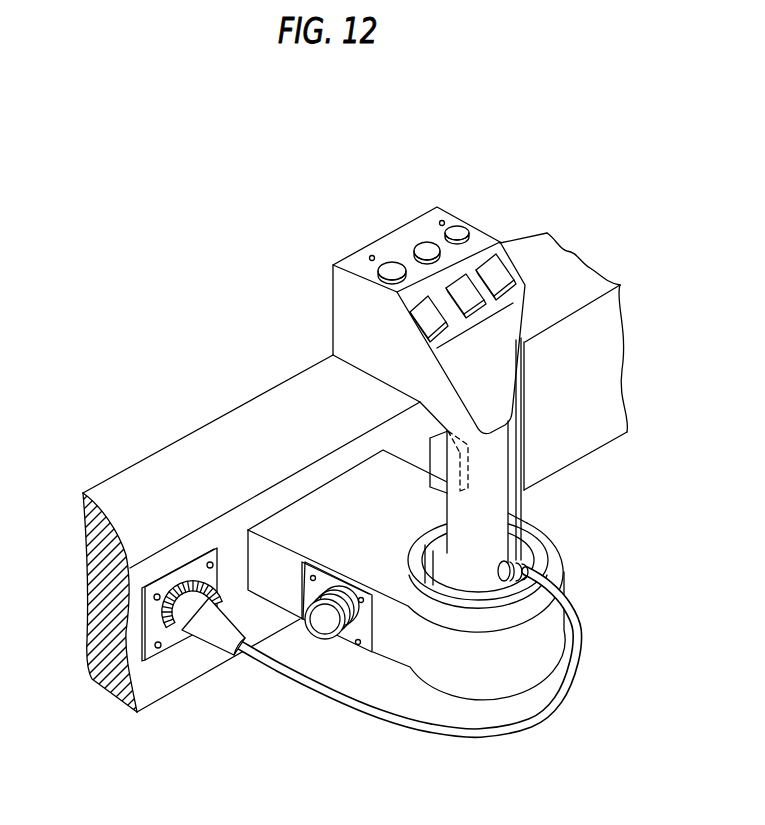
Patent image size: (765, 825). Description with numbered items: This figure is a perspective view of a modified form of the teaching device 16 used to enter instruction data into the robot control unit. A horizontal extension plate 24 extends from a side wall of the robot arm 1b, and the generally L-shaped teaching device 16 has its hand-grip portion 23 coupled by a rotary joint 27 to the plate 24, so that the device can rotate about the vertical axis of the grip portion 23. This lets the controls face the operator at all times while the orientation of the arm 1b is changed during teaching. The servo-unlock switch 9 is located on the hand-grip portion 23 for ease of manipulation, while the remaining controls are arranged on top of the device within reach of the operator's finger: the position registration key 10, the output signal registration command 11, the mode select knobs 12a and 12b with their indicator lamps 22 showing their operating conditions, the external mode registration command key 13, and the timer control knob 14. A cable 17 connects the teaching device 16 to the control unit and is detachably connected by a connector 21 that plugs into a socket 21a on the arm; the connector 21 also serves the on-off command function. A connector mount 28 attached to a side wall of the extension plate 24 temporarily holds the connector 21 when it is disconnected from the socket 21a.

The arm 1b is at (170, 448).
The servo-unlock switch 9 is at (437, 472).
The position registration key 10 is at (495, 246).
The output signal registration command 11 is at (427, 318).
The mode select knob 12a is at (392, 262).
The mode select knob 12b is at (460, 226).
The external mode registration command key 13 is at (506, 285).
The timer control knob 14 is at (428, 242).
The teaching device 16 is at (305, 303).
The cable 17 is at (580, 661).
The connector 21 is at (216, 642).
The socket 21a is at (157, 622).
The indicator lamps 22 is at (369, 258).
The hand-grip portion 23 is at (517, 504).
The horizontal extension plate 24 is at (293, 517).
The rotary joint 27 is at (410, 558).
The connector mount 28 is at (333, 640).